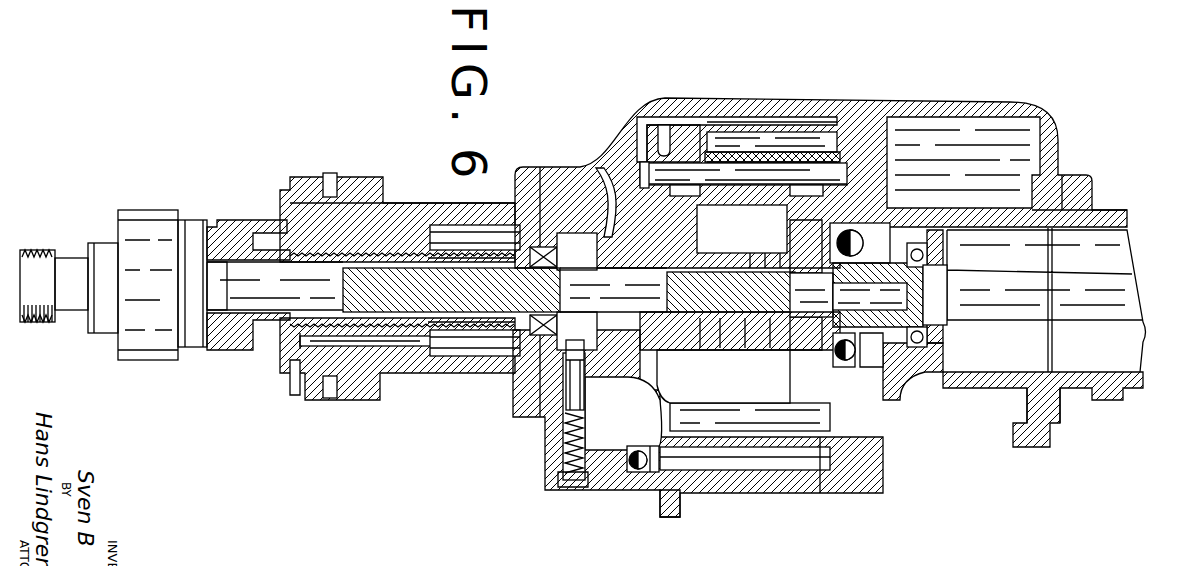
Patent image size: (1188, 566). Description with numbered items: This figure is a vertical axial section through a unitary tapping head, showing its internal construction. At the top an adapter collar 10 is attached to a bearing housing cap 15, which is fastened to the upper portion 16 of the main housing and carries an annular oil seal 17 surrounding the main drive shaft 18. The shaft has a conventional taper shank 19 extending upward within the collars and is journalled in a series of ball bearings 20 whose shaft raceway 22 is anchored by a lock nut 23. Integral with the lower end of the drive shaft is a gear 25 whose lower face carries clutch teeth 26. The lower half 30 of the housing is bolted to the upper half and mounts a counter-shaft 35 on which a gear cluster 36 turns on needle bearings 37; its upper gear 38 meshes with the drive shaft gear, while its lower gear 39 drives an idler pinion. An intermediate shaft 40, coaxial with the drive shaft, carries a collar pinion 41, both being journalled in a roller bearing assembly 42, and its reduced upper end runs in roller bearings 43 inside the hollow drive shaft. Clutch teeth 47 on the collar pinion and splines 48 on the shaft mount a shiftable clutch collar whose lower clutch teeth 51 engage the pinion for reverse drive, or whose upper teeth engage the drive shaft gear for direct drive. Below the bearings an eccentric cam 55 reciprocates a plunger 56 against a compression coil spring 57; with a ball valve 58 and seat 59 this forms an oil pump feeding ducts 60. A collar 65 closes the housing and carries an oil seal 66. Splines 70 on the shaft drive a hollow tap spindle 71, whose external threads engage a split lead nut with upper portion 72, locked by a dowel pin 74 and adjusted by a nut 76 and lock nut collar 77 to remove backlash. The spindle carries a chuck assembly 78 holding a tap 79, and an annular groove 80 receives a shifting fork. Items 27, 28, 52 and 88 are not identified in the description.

The adapter collar 10 is at (1105, 388).
The bearing housing cap 15 is at (975, 388).
The upper portion of the main housing 16 is at (803, 455).
The annular oil seal 17 is at (920, 380).
The main drive shaft 18 is at (932, 162).
The taper shank 19 is at (1142, 322).
The ball bearings 20 is at (884, 416).
The raceway 22 is at (880, 398).
The lock nut 23 is at (290, 226).
The gear 25 is at (880, 242).
The clutch teeth 26 is at (770, 262).
The ring 27 is at (780, 262).
The ring 28 is at (760, 262).
The lower half of the main housing 30 is at (576, 178).
The counter-shaft 35 is at (742, 126).
The gear cluster 36 is at (773, 126).
The needle bearings 37 is at (703, 125).
The upper gear 38 is at (806, 126).
The lower gear 39 is at (676, 125).
The intermediate shaft 40 is at (658, 312).
The collar pinion 41 is at (674, 318).
The roller bearing assembly 42 is at (606, 190).
The roller bearings 43 is at (803, 358).
The clutch teeth 47 is at (700, 320).
The splines 48 is at (738, 262).
The clutch teeth 51 is at (716, 325).
The washer 52 is at (770, 322).
The eccentric cam 55 is at (522, 376).
The plunger 56 is at (566, 395).
The compression coil spring 57 is at (580, 488).
The ball valve 58 is at (636, 470).
The seat 59 is at (626, 472).
The ducts 60 is at (700, 490).
The collar 65 is at (420, 332).
The oil seal 66 is at (516, 215).
The splines 70 is at (406, 322).
The tap spindle 71 is at (441, 324).
The upper portion of the split lead nut 72 is at (394, 235).
The dowel pin 74 is at (300, 378).
The nut 76 is at (362, 390).
The lock nut collar 77 is at (335, 388).
The chuck assembly 78 is at (165, 362).
The tap 79 is at (56, 262).
The annular groove 80 is at (265, 350).
The detent 88 is at (750, 322).